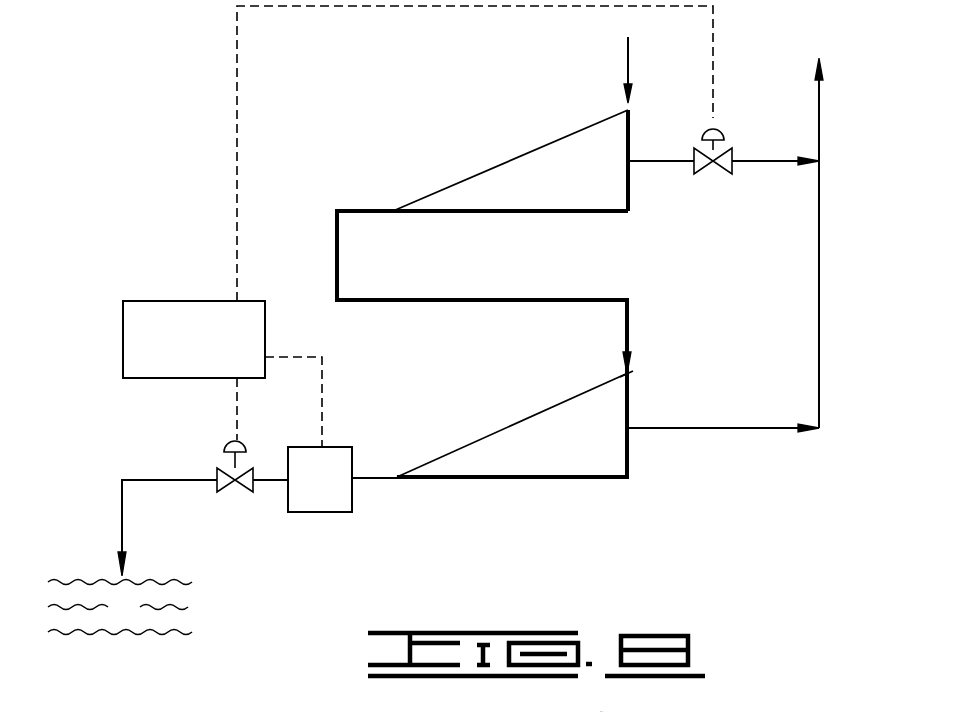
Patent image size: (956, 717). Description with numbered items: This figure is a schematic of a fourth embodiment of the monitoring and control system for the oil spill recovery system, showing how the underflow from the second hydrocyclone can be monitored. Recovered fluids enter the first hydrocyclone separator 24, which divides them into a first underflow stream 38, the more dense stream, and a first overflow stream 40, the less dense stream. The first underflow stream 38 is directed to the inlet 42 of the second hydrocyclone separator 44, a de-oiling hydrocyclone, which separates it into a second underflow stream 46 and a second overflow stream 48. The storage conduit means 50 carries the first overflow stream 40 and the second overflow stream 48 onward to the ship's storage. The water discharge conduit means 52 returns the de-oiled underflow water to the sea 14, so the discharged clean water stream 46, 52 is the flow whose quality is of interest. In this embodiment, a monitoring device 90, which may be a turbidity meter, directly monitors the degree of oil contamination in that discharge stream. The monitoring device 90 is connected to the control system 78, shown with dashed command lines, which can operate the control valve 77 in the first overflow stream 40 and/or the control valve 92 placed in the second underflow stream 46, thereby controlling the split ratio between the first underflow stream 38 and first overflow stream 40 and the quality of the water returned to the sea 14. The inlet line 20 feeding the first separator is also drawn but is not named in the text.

The sea 14 is at (132, 618).
The inlet line 20 is at (628, 60).
The first hydrocyclone separator 24 is at (553, 150).
The first underflow stream 38 is at (337, 259).
The first overflow stream 40 is at (652, 163).
The inlet 42 is at (630, 372).
The second hydrocyclone separator 44 is at (553, 418).
The second underflow stream 46 is at (153, 509).
The second overflow stream 48 is at (698, 430).
The storage conduit means 50 is at (820, 113).
The water discharge conduit means 52 is at (167, 528).
The control valve 77 is at (718, 170).
The control system 78 is at (150, 301).
The monitoring device 90 is at (352, 452).
The control valve 92 is at (243, 492).